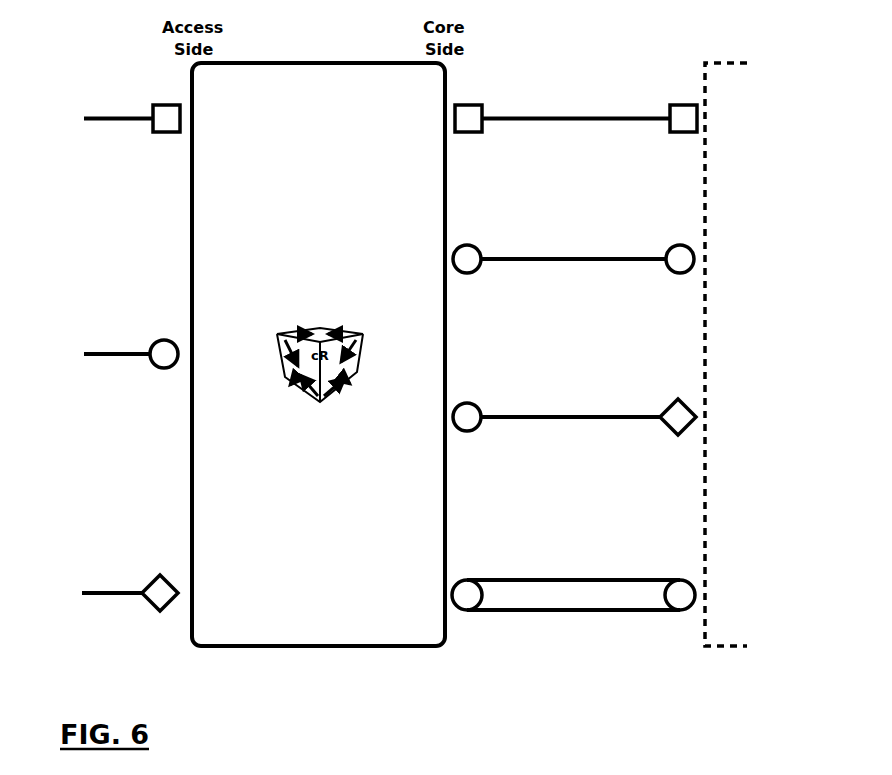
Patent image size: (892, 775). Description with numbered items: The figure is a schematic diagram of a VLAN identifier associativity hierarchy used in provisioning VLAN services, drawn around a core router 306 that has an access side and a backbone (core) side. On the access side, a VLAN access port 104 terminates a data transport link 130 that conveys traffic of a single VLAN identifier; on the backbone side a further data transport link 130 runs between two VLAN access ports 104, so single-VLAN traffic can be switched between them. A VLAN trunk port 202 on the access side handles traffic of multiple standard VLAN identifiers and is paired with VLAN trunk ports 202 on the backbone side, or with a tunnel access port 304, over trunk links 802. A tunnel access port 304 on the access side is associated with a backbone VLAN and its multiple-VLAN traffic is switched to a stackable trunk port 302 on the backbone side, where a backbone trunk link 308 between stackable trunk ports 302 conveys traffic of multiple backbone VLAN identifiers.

The VLAN access port 104 is at (162, 104).
The data transport link 130 is at (119, 117).
The VLAN trunk port 202 is at (158, 343).
The trunk link 802 is at (108, 356).
The tunnel access port 304 is at (156, 578).
The stackable trunk port 302 is at (462, 580).
The backbone trunk link 308 is at (549, 590).
The core router 306 is at (308, 83).